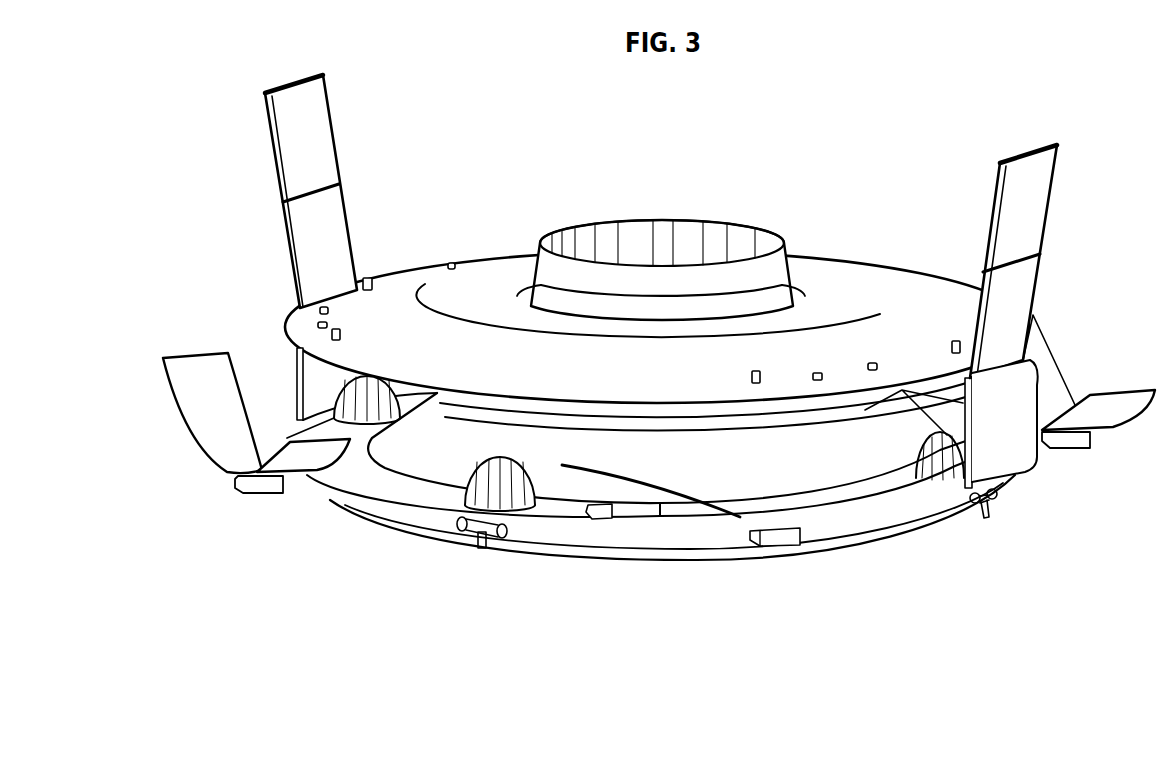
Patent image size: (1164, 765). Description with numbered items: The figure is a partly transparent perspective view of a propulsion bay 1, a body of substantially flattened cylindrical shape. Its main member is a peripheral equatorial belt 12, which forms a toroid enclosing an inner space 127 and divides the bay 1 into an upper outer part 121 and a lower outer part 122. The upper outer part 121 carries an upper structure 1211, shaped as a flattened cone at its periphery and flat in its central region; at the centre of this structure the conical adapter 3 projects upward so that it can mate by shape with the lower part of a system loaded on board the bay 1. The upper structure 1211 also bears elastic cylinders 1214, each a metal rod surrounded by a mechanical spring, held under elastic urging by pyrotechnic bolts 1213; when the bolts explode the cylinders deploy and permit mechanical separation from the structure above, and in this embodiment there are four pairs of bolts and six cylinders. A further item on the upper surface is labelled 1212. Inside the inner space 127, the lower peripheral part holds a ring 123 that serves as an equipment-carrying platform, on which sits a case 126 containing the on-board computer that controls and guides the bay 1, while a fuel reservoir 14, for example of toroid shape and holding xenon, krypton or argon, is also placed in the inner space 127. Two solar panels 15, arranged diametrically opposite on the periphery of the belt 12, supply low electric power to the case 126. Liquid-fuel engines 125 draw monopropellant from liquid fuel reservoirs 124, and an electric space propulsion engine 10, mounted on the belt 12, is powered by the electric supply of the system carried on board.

The propulsion bay 1 is at (842, 146).
The adapter 3 is at (664, 219).
The electric space propulsion engine 10 is at (265, 485).
The peripheral equatorial belt 12 is at (322, 398).
The fuel reservoir 14 is at (812, 421).
The solar panels 15 is at (315, 132).
The upper outer part 121 is at (864, 256).
The lower outer part 122 is at (830, 575).
The ring 123 is at (392, 485).
The liquid fuel reservoirs 124 is at (521, 507).
The engines 125 is at (480, 537).
The case 126 is at (589, 514).
The inner space 127 is at (663, 470).
The upper structure 1211 is at (920, 323).
The mounting surface 1212 is at (756, 368).
The pyrotechnic bolts 1213 is at (450, 266).
The elastic cylinders 1214 is at (338, 328).